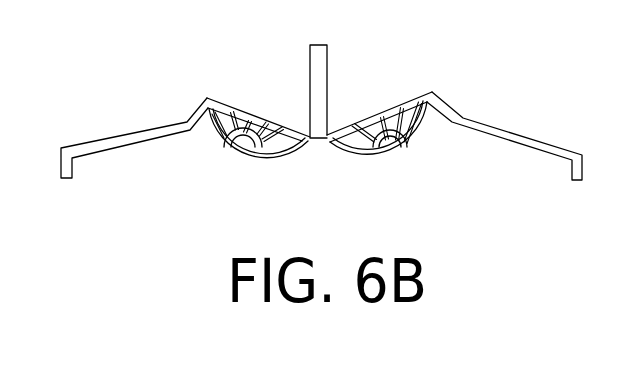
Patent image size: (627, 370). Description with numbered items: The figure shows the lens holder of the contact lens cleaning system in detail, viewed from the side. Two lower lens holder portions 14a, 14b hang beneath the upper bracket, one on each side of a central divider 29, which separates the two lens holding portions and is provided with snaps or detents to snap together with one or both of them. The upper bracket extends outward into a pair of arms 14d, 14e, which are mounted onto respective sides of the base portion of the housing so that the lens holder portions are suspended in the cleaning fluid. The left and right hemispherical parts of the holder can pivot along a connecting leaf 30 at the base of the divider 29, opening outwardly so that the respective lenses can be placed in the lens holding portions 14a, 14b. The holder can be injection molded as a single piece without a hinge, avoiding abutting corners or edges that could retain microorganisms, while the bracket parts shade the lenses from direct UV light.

The arm 14d is at (98, 141).
The lower lens holder portion 14a is at (240, 157).
The divider 29 is at (322, 80).
The connecting leaf 30 is at (315, 140).
The lower lens holder portion 14b is at (397, 150).
The arm 14e is at (522, 137).